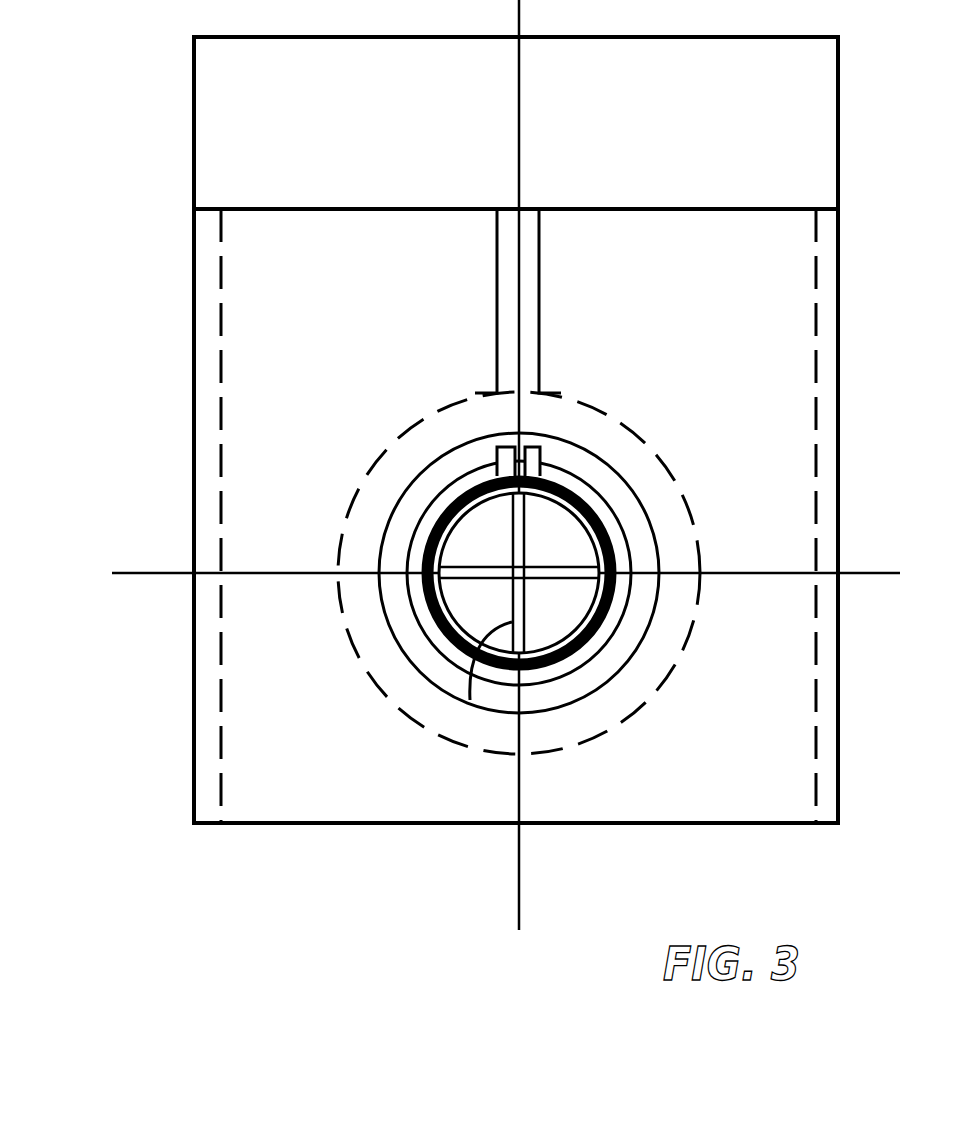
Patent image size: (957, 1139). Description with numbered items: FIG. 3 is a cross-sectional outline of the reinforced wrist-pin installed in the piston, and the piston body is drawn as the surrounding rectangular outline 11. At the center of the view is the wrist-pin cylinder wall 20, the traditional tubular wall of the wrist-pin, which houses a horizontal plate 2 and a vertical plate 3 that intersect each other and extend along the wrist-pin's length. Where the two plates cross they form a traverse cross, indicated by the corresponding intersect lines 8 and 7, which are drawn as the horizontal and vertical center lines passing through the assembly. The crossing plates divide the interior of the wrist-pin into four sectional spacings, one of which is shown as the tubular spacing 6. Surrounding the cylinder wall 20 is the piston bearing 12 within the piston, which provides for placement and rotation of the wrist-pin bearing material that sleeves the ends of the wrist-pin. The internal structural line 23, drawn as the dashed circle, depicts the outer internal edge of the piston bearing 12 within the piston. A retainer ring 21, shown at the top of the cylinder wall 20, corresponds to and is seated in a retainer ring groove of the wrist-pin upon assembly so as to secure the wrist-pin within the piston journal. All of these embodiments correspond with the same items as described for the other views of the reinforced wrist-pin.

The horizontal plate 2 is at (470, 583).
The vertical plate 3 is at (470, 700).
The tubular spacing 6 is at (580, 557).
The intersect line 7 is at (520, 888).
The intersect line 8 is at (145, 573).
The housing block 11 is at (248, 317).
The piston bearing 12 is at (637, 598).
The wrist-pin cylinder wall 20 is at (460, 517).
The retainer ring 21 is at (543, 471).
The internal structural line 23 is at (658, 686).